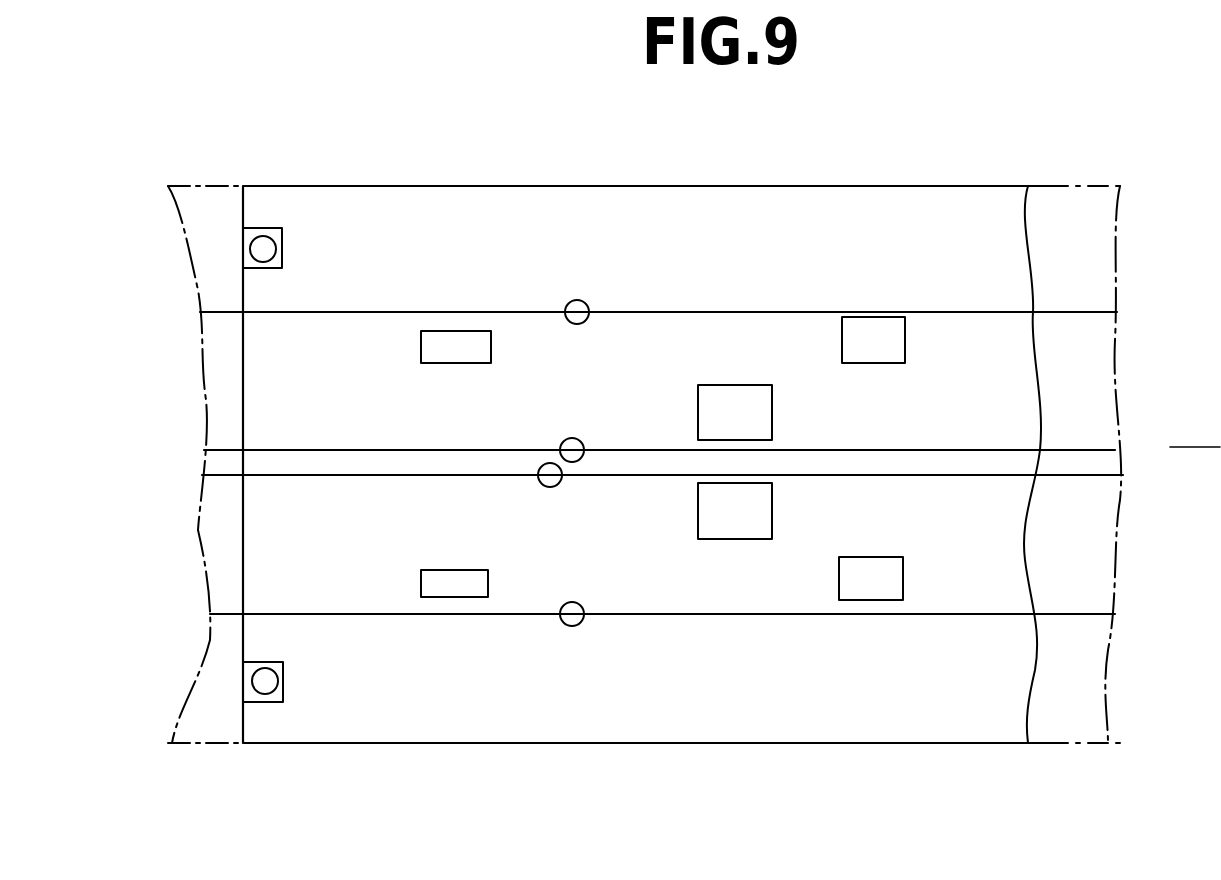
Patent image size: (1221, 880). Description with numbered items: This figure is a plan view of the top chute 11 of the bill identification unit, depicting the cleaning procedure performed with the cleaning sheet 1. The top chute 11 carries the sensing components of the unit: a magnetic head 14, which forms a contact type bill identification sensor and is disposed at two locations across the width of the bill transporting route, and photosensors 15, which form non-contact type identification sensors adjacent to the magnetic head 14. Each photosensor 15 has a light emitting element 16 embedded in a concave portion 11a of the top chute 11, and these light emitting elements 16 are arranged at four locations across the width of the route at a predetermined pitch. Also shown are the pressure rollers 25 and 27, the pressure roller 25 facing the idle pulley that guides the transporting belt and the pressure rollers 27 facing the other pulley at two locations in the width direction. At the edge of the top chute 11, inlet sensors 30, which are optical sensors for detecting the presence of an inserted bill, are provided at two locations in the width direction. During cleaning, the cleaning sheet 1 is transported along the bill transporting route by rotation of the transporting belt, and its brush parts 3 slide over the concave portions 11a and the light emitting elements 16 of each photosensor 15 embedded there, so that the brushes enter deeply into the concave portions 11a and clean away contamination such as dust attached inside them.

The cleaning sheet 1 is at (1113, 186).
The brush parts 3 is at (1090, 310).
The top chute 11 is at (943, 208).
The concave portions 11a is at (585, 322).
The magnetic head 14 is at (745, 408).
The photosensor 15 is at (652, 285).
The light emitting element 16 is at (580, 300).
The pressure roller 25 is at (458, 347).
The pressure roller 27 is at (876, 340).
The inlet sensor 30 is at (265, 228).